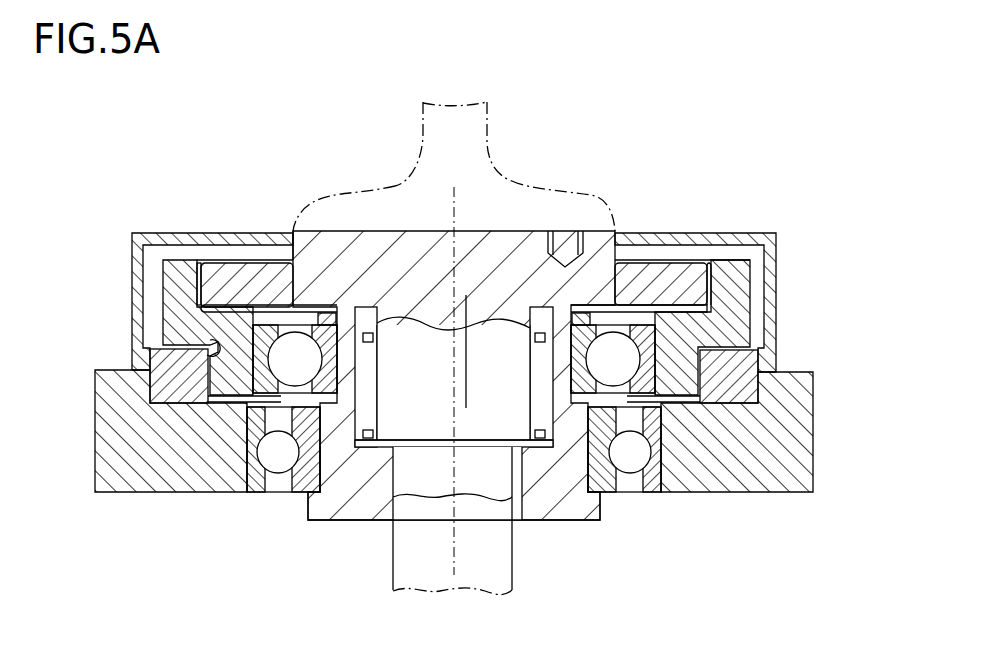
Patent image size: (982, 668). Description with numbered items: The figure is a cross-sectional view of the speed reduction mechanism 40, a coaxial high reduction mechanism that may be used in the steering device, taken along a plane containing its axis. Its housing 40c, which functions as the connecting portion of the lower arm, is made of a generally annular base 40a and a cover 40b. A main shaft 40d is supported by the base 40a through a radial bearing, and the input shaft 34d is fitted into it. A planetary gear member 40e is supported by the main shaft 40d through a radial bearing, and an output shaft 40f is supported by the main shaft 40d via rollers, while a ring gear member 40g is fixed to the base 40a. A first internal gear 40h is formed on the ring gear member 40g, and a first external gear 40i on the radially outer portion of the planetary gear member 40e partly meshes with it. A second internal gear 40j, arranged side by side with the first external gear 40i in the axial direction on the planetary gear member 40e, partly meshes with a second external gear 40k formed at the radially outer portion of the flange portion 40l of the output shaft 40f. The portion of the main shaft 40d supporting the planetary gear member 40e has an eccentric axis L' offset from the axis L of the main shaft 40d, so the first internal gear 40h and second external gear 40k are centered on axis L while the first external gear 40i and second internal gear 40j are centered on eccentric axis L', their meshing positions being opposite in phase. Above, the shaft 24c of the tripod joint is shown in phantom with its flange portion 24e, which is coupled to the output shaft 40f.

The speed reduction mechanism 40 is at (745, 134).
The base 40a is at (805, 395).
The cover 40b is at (772, 273).
The housing 40c is at (824, 299).
The main shaft 40d is at (565, 500).
The planetary gear member 40e is at (187, 325).
The output shaft 40f is at (350, 243).
The ring gear member 40g is at (160, 388).
The first internal gear 40h is at (213, 358).
The first external gear 40i is at (208, 372).
The second internal gear 40j is at (703, 273).
The second external gear 40k is at (697, 293).
The flange portion 40l is at (235, 278).
The shaft 24c is at (482, 113).
The flange portion 24e is at (530, 183).
The input shaft 34d is at (468, 580).
The axis L is at (433, 381).
The eccentric axis L' is at (495, 351).